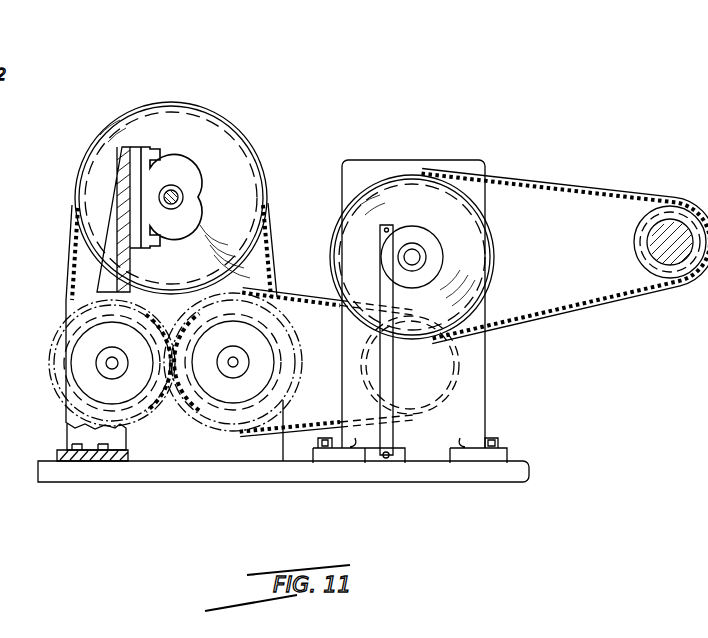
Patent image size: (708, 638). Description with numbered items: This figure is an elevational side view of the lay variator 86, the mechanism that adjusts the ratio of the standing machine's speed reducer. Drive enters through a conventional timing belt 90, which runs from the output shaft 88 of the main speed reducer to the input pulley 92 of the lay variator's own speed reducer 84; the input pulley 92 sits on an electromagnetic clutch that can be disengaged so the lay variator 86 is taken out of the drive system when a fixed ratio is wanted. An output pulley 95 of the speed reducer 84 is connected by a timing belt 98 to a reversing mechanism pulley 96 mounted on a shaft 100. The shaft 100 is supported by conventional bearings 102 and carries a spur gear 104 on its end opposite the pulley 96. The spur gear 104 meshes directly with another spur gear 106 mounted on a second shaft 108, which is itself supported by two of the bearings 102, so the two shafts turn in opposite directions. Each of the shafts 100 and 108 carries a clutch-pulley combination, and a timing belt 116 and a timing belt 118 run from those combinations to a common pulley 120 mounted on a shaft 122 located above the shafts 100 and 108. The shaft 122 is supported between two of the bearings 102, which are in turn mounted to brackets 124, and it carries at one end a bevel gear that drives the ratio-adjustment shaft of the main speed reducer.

The speed reducer 84 is at (455, 160).
The lay variator 86 is at (373, 112).
The output shaft 88 is at (670, 212).
The timing belt 90 is at (612, 296).
The input pulley 92 is at (493, 246).
The output pulley 95 is at (452, 388).
The reversing mechanism pulley 96 is at (292, 395).
The timing belt 98 is at (313, 296).
The shaft 100 is at (233, 372).
The bearings 102 is at (150, 146).
The spur gear 104 is at (160, 402).
The spur gear 106 is at (148, 402).
The shaft 108 is at (106, 368).
The timing belt 116 is at (275, 240).
The timing belt 118 is at (70, 270).
The common pulley 120 is at (116, 128).
The shaft 122 is at (174, 193).
The brackets 124 is at (113, 197).